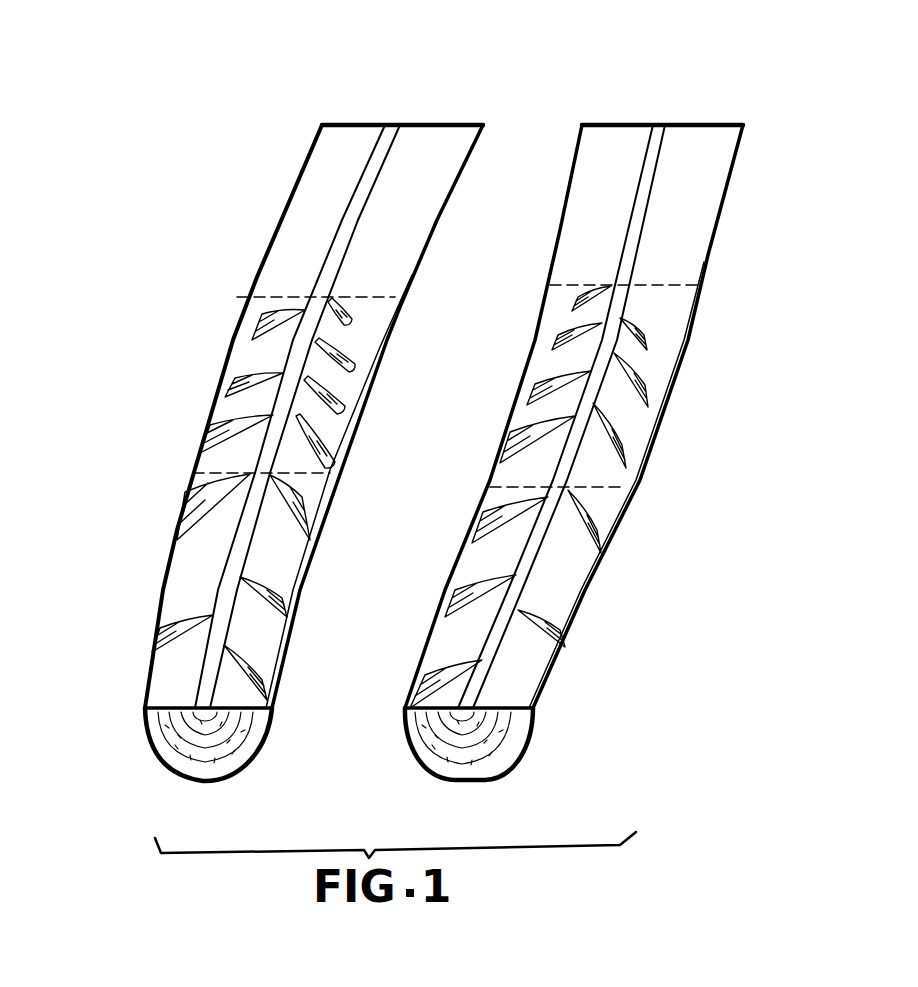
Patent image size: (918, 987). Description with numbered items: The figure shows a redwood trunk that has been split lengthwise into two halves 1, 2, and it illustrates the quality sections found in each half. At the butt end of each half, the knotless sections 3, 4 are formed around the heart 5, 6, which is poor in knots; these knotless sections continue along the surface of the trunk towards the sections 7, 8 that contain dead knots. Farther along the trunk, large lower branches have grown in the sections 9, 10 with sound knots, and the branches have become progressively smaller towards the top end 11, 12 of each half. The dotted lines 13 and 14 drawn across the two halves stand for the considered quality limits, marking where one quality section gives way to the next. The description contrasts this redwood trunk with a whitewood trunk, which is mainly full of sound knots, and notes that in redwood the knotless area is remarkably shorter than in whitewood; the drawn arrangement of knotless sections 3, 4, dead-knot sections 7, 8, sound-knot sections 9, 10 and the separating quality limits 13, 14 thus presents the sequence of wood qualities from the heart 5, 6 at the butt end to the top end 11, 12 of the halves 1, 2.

The trunk half 1 is at (157, 755).
The trunk half 2 is at (531, 736).
The knotless section 3 is at (312, 172).
The knotless section 4 is at (708, 189).
The heart 5 is at (397, 127).
The heart 6 is at (662, 125).
The section containing dead knots 7 is at (240, 363).
The section containing dead knots 8 is at (705, 368).
The section with sound knots 9 is at (180, 514).
The section with sound knots 10 is at (633, 545).
The top end 11 is at (148, 630).
The top end 12 is at (567, 640).
The dotted line 13 is at (257, 280).
The dotted line 14 is at (672, 286).